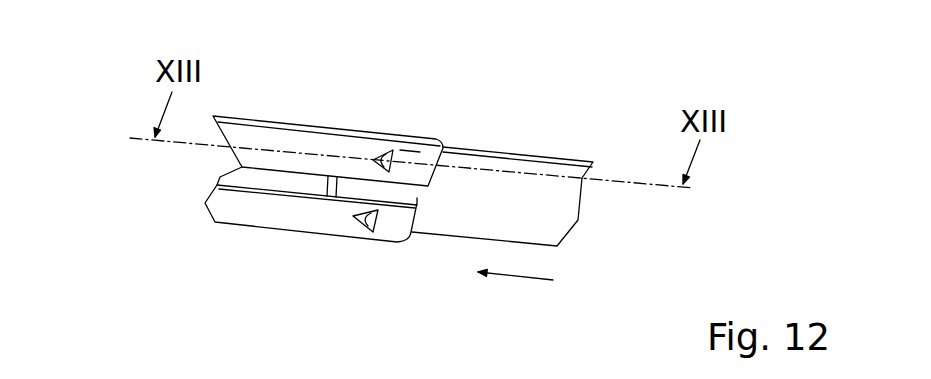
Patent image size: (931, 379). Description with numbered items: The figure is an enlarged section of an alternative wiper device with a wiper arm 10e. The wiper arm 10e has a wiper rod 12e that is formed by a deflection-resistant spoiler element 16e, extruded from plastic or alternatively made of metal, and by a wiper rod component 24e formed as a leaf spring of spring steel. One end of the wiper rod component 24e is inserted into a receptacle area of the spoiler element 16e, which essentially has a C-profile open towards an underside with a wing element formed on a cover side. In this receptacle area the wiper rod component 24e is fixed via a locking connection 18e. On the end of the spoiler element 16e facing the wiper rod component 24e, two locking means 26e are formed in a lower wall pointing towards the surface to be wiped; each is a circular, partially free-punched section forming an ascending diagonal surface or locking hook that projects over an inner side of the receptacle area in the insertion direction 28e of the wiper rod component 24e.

The wiper arm 10e is at (428, 108).
The wiper rod 12e is at (547, 138).
The spoiler element 16e is at (265, 137).
The locking connection 18e is at (387, 145).
The wiper rod component 24e is at (538, 207).
The locking means 26e is at (378, 152).
The insertion direction 28e is at (512, 280).